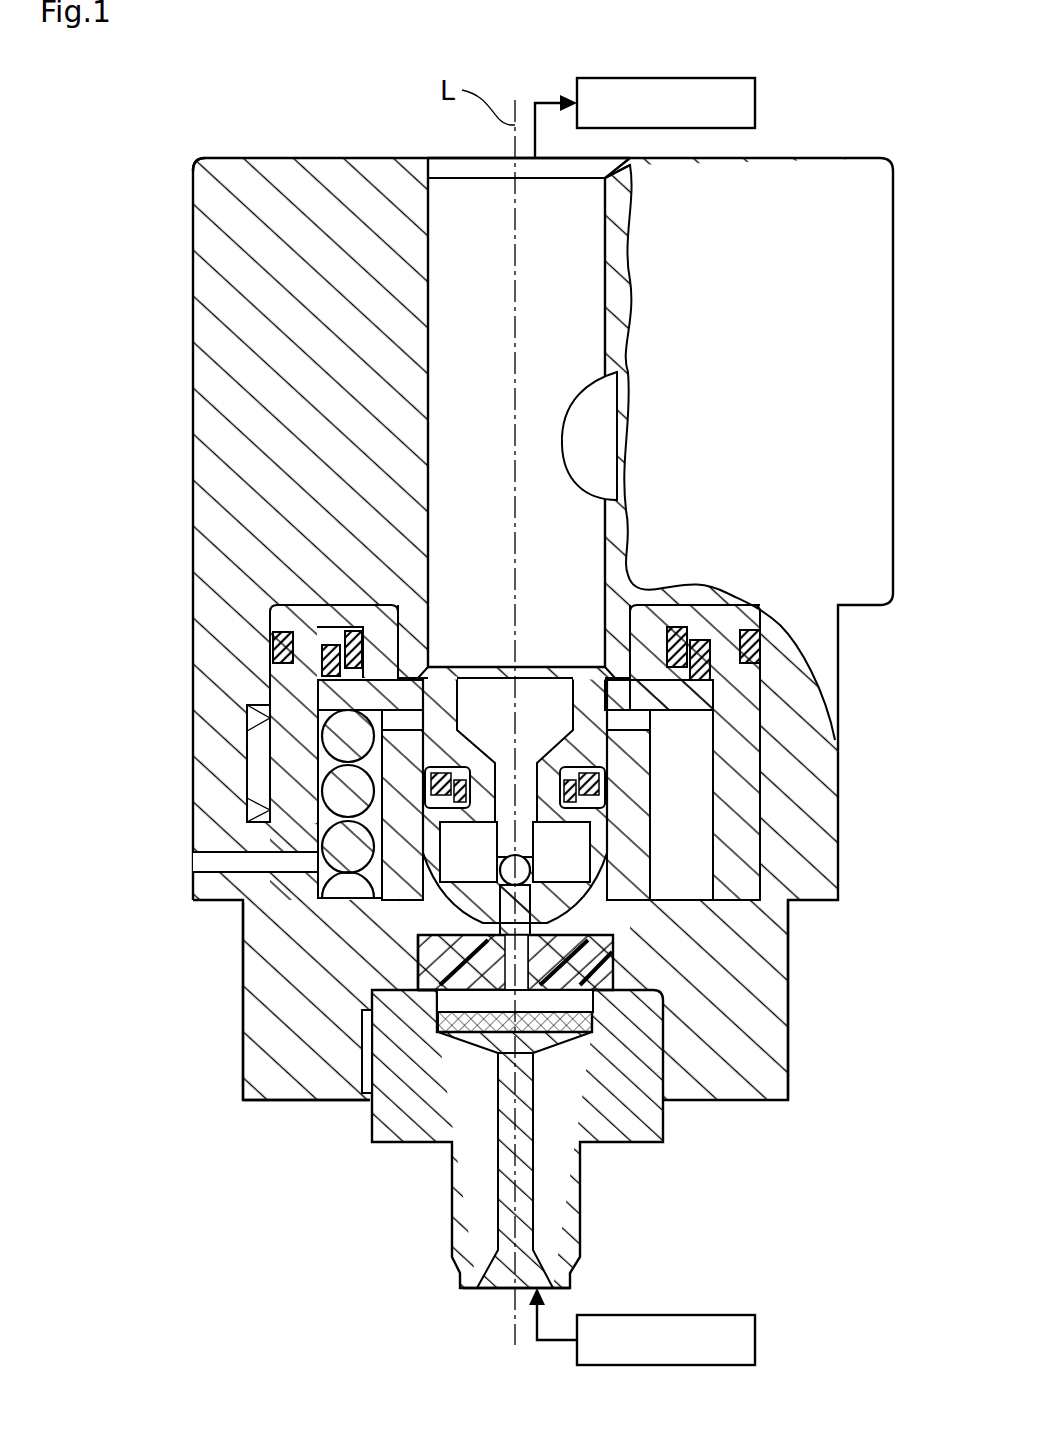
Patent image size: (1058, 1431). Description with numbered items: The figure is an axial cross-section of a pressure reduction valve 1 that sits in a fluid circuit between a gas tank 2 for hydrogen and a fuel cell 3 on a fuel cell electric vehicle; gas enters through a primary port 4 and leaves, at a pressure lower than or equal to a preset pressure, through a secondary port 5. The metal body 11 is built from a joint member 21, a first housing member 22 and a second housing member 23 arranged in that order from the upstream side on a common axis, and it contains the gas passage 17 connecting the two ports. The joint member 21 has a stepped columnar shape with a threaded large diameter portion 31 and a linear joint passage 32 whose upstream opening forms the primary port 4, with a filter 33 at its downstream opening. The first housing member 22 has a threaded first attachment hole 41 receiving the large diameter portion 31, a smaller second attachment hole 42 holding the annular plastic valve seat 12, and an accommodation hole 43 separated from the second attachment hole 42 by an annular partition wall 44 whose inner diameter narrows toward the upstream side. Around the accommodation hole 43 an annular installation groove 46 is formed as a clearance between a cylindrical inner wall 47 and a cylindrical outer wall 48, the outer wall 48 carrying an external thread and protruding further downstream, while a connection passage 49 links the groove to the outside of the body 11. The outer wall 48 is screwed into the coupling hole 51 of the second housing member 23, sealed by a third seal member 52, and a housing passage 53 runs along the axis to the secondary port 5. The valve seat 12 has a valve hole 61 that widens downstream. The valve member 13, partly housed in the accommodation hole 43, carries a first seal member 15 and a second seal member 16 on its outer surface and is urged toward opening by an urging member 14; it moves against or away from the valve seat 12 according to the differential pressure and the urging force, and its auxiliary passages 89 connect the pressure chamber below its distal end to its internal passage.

The pressure reduction valve 1 is at (172, 152).
The gas tank 2 is at (757, 1340).
The fuel cell 3 is at (757, 103).
The primary port 4 is at (500, 1282).
The secondary port 5 is at (468, 165).
The body 11 is at (555, 643).
The valve seat 12 is at (418, 937).
The valve member 13 is at (706, 604).
The urging member 14 is at (345, 737).
The first seal member 15 is at (430, 780).
The second seal member 16 is at (318, 668).
The gas passage 17 is at (337, 980).
The joint member 21 is at (668, 1128).
The first housing member 22 is at (788, 950).
The second housing member 23 is at (840, 882).
The large diameter portion 31 is at (612, 1130).
The joint passage 32 is at (533, 1215).
The filter 33 is at (455, 1018).
The first attachment hole 41 is at (372, 1080).
The second attachment hole 42 is at (418, 975).
The accommodation hole 43 is at (602, 892).
The partition wall 44 is at (515, 962).
The installation groove 46 is at (730, 805).
The inner wall 47 is at (615, 705).
The outer wall 48 is at (748, 605).
The connection passage 49 is at (196, 865).
The coupling hole 51 is at (748, 676).
The third seal member 52 is at (285, 640).
The housing passage 53 is at (610, 240).
The valve hole 61 is at (538, 1012).
The auxiliary passages 89 is at (515, 824).